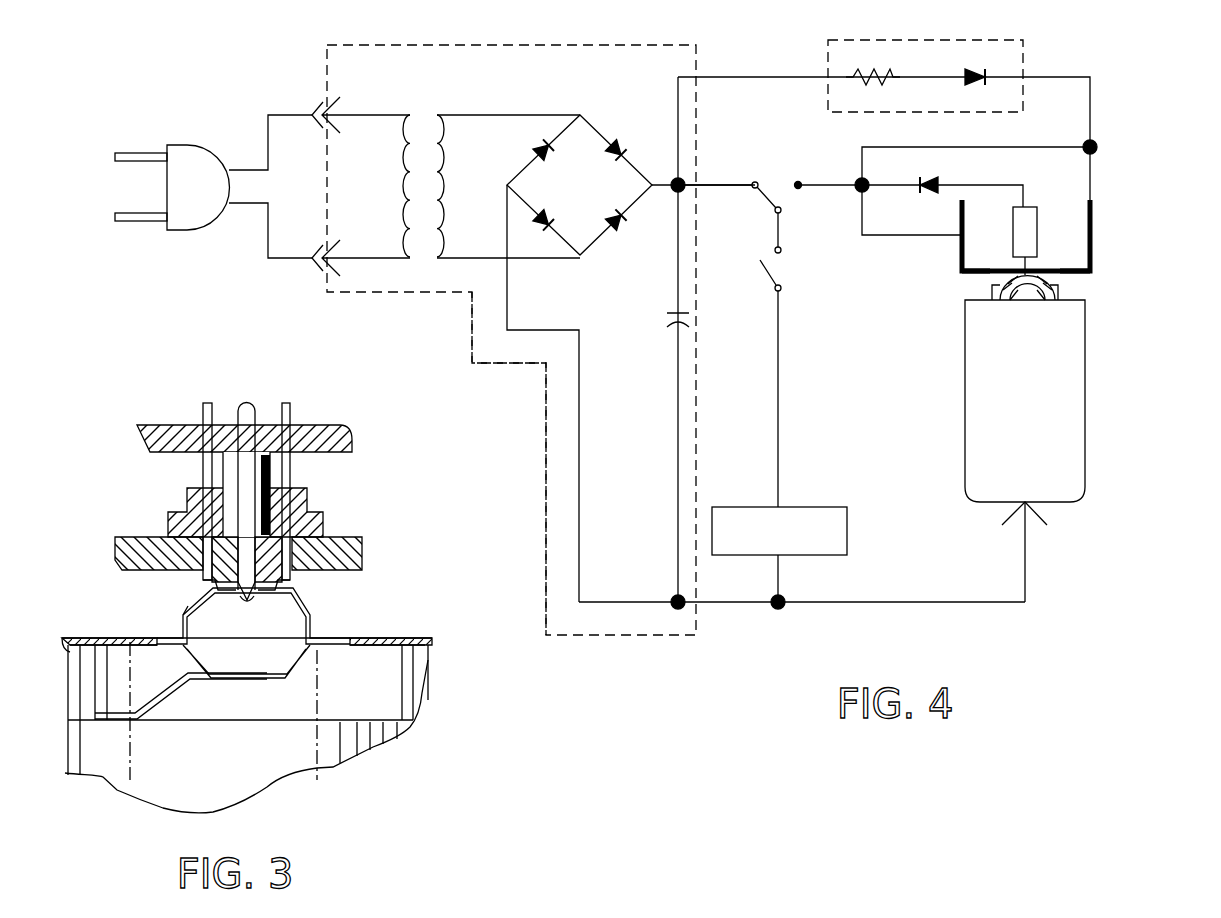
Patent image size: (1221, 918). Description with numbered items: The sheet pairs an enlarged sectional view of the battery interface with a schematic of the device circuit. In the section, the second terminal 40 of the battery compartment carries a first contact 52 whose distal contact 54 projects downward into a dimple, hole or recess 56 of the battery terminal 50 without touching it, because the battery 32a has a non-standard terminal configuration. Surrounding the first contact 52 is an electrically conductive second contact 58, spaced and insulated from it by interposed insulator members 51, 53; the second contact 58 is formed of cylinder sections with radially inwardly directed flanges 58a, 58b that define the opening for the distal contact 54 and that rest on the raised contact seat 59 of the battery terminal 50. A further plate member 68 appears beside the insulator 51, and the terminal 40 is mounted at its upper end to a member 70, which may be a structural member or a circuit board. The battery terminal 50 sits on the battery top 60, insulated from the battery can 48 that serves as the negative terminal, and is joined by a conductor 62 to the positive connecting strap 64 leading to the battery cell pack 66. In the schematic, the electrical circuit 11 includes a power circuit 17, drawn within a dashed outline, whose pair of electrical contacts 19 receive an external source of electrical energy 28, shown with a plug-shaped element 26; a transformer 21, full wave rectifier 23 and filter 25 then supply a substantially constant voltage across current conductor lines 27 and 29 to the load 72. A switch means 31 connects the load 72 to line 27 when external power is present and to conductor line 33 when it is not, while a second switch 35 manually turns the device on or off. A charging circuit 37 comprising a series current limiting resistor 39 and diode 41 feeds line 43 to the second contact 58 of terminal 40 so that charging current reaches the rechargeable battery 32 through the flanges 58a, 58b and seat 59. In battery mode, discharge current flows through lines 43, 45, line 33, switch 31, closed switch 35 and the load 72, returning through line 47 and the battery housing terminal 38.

In FIG. 4, the electrical circuit 11 is at (706, 65).
In FIG. 4, the power circuit 17 is at (544, 413).
In FIG. 4, the electrical contacts 19 is at (318, 102).
In FIG. 4, the transformer 21 is at (420, 118).
In FIG. 4, the full wave rectifier 23 is at (562, 201).
In FIG. 4, the filter 25 is at (667, 316).
In FIG. 4, the plug 26 is at (183, 147).
In FIG. 4, the current conductor line 27 is at (718, 181).
In FIG. 4, the external source of electrical energy 28 is at (265, 223).
In FIG. 4, the current conductor line 29 is at (722, 604).
In FIG. 4, the switch means 31 is at (775, 177).
In FIG. 4, the rechargeable battery 32 is at (1051, 401).
In FIG. 3, the battery 32a is at (264, 696).
In FIG. 4, the conductor line 33 is at (823, 178).
In FIG. 4, the second switch 35 is at (758, 259).
In FIG. 4, the charging circuit means 37 is at (1022, 58).
In FIG. 4, the battery housing terminal 38 is at (1040, 512).
In FIG. 4, the current limiting resistor 39 is at (875, 72).
In FIG. 4, the second terminal of the battery compartment 40 is at (1029, 243).
In FIG. 3, the second terminal of the battery compartment 40 is at (221, 527).
In FIG. 4, the diode 41 is at (970, 82).
In FIG. 4, the line 43 is at (1093, 112).
In FIG. 4, the line 45 is at (1000, 147).
In FIG. 4, the line 47 is at (930, 604).
In FIG. 4, the battery can 48 is at (1085, 415).
In FIG. 4, the battery terminal 50 is at (1060, 286).
In FIG. 3, the battery terminal 50 is at (318, 617).
In FIG. 3, the insulator member 51 is at (310, 501).
In FIG. 4, the first contact 52 is at (1037, 225).
In FIG. 3, the first contact 52 is at (245, 482).
In FIG. 3, the insulator member 53 is at (300, 574).
In FIG. 3, the distal contact 54 is at (205, 648).
In FIG. 3, the recess 56 is at (250, 597).
In FIG. 4, the second contact 58 is at (1092, 210).
In FIG. 3, the second contact 58 is at (200, 470).
In FIG. 4, the flange 58a is at (975, 273).
In FIG. 3, the flange 58a is at (190, 574).
In FIG. 4, the flange 58b is at (1060, 280).
In FIG. 3, the flange 58b is at (252, 600).
In FIG. 3, the raised contact seat 59 is at (180, 606).
In FIG. 3, the battery top 60 is at (407, 638).
In FIG. 3, the conductor 62 is at (190, 690).
In FIG. 3, the positive connecting strap 64 is at (248, 711).
In FIG. 3, the battery cell pack 66 is at (335, 768).
In FIG. 3, the mounting plate 68 is at (363, 546).
In FIG. 3, the member 70 is at (303, 433).
In FIG. 4, the load 72 is at (812, 507).